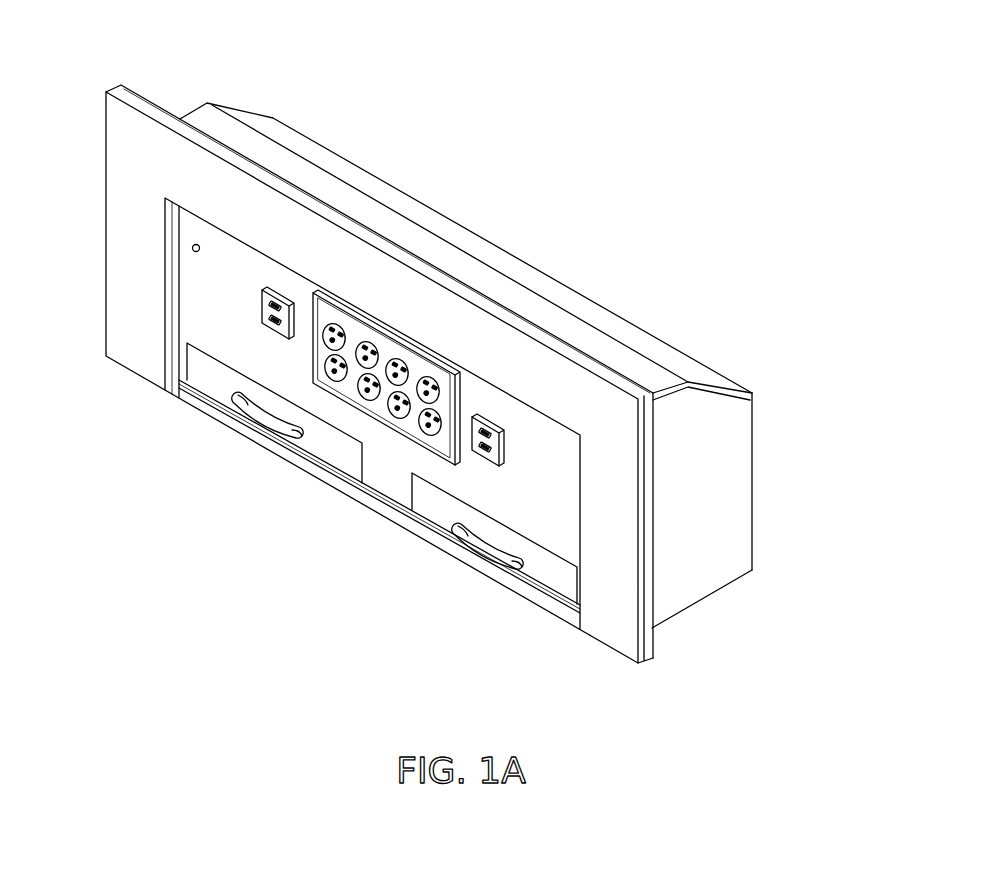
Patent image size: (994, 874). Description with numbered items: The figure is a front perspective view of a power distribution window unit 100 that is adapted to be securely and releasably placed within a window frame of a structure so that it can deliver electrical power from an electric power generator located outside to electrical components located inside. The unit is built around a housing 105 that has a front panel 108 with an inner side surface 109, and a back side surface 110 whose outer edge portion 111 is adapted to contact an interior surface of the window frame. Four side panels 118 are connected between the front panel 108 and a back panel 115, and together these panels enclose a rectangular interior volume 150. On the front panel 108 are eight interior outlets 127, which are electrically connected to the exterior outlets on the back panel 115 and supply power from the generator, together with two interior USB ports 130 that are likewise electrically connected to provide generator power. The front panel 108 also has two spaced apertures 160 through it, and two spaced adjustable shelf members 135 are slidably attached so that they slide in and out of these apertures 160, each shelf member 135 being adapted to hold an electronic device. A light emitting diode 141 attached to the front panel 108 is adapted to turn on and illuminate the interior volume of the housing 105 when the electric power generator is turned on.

The power distribution window unit 100 is at (676, 50).
The housing 105 is at (673, 348).
The front panel 108 is at (512, 500).
The inner side surface 109 is at (658, 585).
The back side surface 110 is at (767, 415).
The outer edge portion 111 is at (647, 638).
The back panel 115 is at (769, 475).
The side panel 118 is at (717, 548).
The interior outlet 127 is at (302, 378).
The interior USB port 130 is at (260, 311).
The adjustable shelf member 135 is at (237, 386).
The light emitting diode 141 is at (192, 248).
The rectangular interior volume 150 is at (362, 192).
The aperture 160 is at (332, 456).